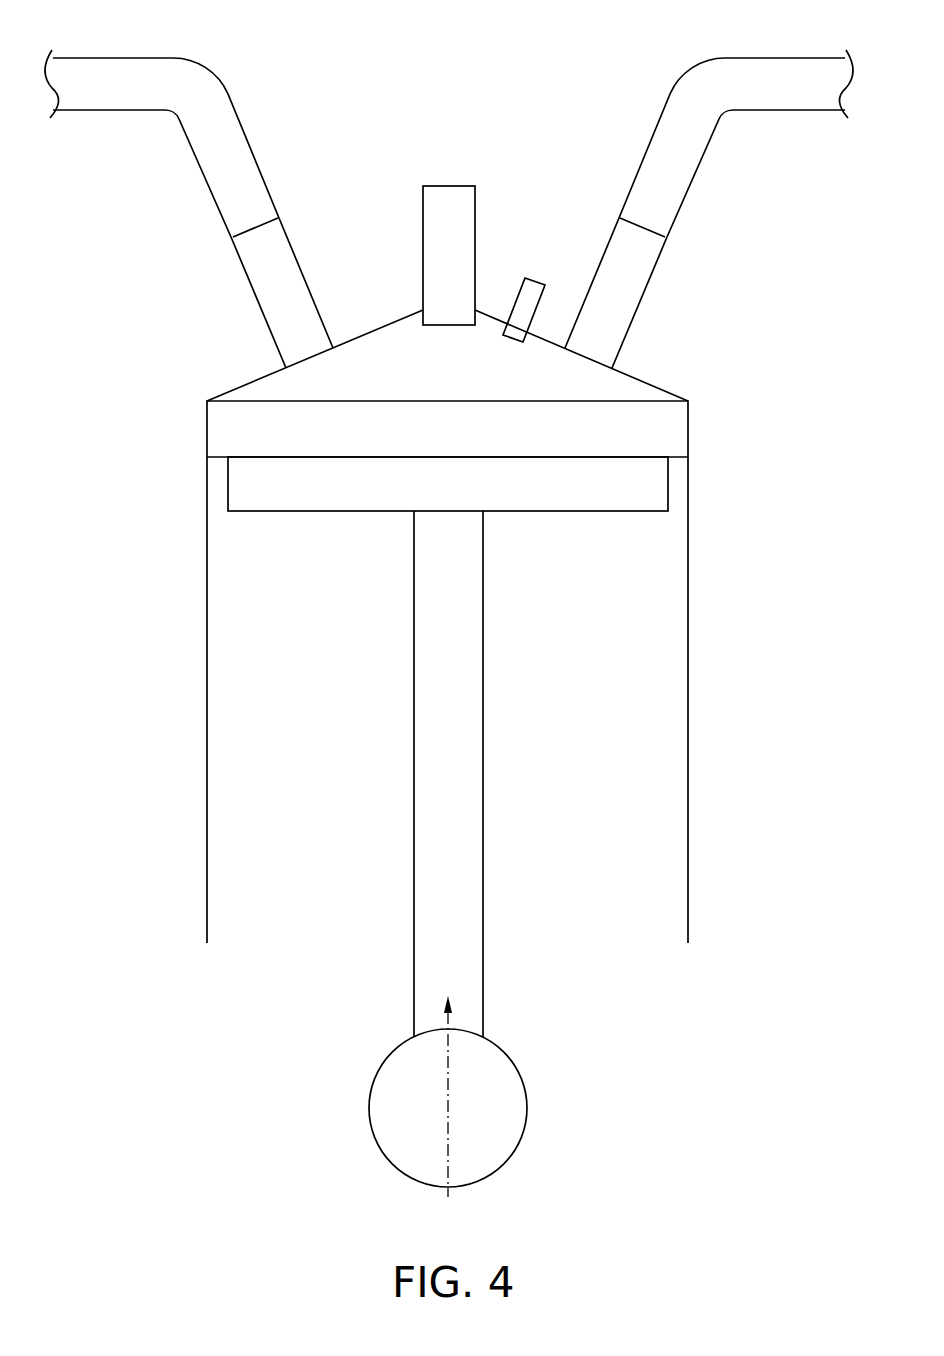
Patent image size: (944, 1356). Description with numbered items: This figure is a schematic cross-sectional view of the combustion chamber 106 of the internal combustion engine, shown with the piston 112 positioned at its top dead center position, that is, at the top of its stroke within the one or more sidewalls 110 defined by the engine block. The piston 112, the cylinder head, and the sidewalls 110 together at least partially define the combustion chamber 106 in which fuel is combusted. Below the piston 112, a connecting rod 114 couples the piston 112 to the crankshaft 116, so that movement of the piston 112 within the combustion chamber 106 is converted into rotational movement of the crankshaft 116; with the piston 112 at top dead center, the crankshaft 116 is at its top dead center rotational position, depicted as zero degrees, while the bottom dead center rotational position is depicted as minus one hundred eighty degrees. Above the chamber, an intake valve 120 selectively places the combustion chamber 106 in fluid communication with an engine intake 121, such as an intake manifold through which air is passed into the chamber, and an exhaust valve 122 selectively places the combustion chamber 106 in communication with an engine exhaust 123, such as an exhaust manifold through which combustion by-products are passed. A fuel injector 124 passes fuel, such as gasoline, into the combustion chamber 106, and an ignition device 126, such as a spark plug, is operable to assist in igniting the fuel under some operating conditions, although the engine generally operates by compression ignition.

The combustion chamber 106 is at (469, 372).
The sidewalls 110 is at (690, 695).
The piston 112 is at (314, 500).
The connecting rod 114 is at (474, 702).
The crankshaft 116 is at (493, 1165).
The intake valve 120 is at (270, 304).
The engine intake 121 is at (118, 68).
The exhaust valve 122 is at (623, 302).
The engine exhaust 123 is at (777, 68).
The fuel injector 124 is at (448, 192).
The ignition device 126 is at (535, 290).